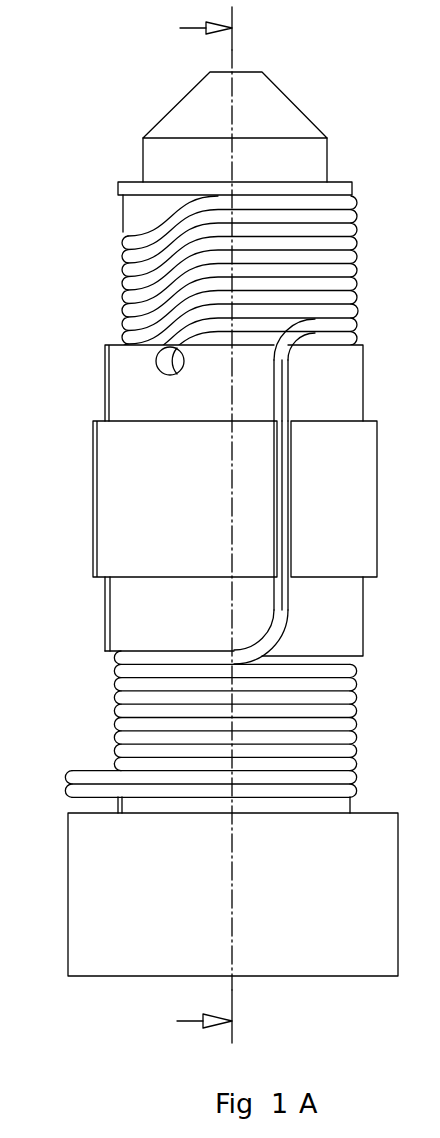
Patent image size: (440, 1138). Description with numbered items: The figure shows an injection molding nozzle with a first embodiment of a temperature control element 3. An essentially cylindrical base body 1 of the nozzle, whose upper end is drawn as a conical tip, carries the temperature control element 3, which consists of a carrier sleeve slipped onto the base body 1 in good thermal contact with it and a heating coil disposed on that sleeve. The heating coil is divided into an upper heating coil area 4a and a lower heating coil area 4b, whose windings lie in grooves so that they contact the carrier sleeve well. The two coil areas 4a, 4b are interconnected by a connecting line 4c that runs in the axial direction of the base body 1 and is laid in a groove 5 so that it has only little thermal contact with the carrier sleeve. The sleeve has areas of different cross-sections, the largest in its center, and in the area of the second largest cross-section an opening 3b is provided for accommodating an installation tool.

The base body 1 is at (278, 113).
The temperature control element 3 is at (103, 185).
The opening 3b is at (163, 361).
The upper heating coil area 4a is at (358, 197).
The lower heating coil area 4b is at (355, 663).
The connecting line 4c is at (280, 407).
The groove 5 is at (284, 386).